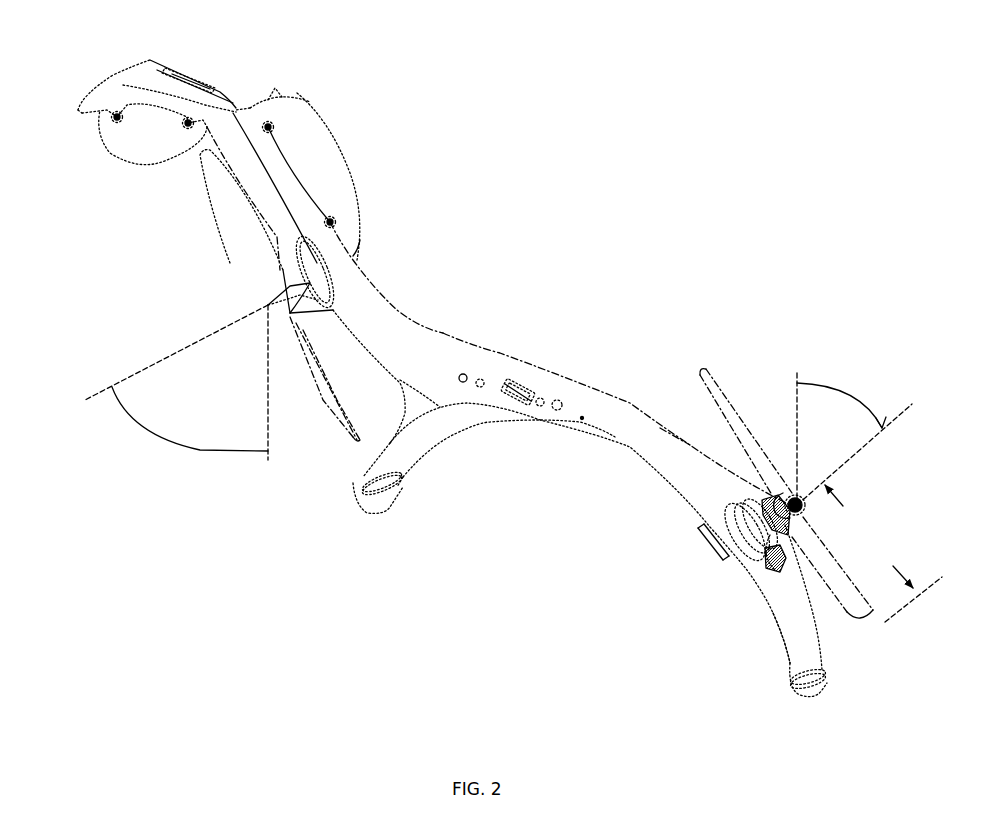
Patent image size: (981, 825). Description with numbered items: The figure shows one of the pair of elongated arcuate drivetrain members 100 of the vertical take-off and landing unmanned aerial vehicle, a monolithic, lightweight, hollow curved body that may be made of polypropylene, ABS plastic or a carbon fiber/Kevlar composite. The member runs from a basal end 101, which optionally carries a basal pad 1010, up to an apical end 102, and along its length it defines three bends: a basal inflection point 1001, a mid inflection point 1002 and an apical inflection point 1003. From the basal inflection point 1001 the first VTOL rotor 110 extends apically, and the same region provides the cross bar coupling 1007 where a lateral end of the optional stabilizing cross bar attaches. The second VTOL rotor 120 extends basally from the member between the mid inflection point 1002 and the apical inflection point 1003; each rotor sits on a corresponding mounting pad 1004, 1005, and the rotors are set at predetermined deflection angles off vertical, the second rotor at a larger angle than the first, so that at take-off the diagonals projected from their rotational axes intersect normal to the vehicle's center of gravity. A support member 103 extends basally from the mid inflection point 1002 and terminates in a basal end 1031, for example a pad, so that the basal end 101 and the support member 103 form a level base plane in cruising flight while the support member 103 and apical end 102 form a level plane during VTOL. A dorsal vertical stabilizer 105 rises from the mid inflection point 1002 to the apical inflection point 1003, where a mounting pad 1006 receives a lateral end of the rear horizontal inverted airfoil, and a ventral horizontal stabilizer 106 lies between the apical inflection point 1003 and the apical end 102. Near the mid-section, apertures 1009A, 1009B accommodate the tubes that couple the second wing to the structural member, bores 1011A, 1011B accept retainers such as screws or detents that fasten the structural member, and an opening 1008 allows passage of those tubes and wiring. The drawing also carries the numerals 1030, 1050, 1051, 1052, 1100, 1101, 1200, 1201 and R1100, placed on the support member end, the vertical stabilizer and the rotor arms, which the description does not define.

The elongated arcuate drivetrain member 100 is at (693, 480).
The basal end 101 is at (793, 667).
The apical end 102 is at (78, 103).
The support member 103 is at (383, 473).
The dorsal vertical stabilizer 105 is at (303, 138).
The ventral horizontal stabilizer 106 is at (127, 140).
The first VTOL rotor 110 is at (803, 505).
The second VTOL rotor 120 is at (267, 305).
The basal inflection point 1001 is at (673, 437).
The mid inflection point 1002 is at (397, 310).
The apical inflection point 1003 is at (240, 106).
The mounting pad 1004 is at (750, 557).
The mounting pad 1005 is at (307, 287).
The mounting pad 1006 is at (167, 72).
The cross bar coupling 1007 is at (753, 512).
The opening 1008 is at (523, 410).
The aperture 1009A is at (557, 410).
The aperture 1009B is at (460, 377).
The basal pad 1010 is at (793, 688).
The bore 1011A is at (477, 380).
The bore 1011B is at (530, 393).
The stem end ring 1030 is at (387, 447).
The basal end of support member 1031 is at (353, 497).
The neck lower end 1050 is at (353, 256).
The neck upper bump 1051 is at (270, 100).
The neck upper tab 1052 is at (280, 90).
The arm 1100 is at (786, 493).
The arm slot 1101 is at (707, 533).
The leg 1200 is at (307, 360).
The leg upper part 1201 is at (280, 277).
The radius of arm R1100 is at (883, 553).